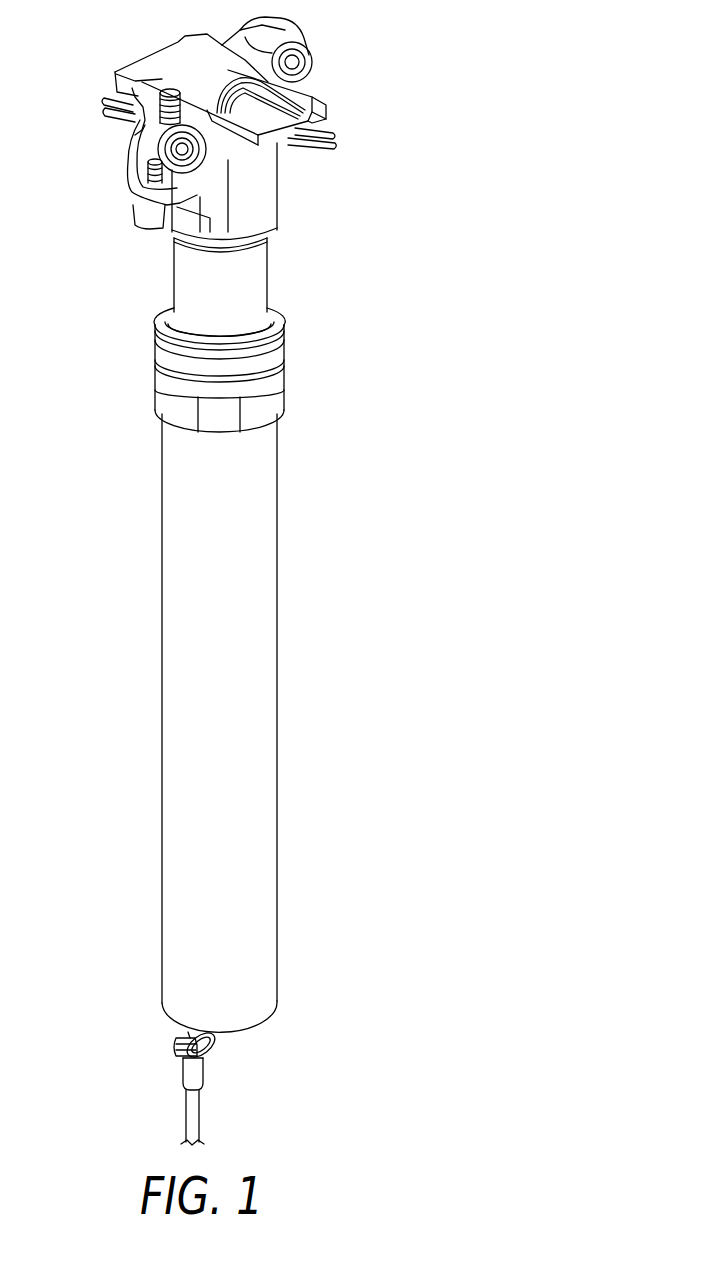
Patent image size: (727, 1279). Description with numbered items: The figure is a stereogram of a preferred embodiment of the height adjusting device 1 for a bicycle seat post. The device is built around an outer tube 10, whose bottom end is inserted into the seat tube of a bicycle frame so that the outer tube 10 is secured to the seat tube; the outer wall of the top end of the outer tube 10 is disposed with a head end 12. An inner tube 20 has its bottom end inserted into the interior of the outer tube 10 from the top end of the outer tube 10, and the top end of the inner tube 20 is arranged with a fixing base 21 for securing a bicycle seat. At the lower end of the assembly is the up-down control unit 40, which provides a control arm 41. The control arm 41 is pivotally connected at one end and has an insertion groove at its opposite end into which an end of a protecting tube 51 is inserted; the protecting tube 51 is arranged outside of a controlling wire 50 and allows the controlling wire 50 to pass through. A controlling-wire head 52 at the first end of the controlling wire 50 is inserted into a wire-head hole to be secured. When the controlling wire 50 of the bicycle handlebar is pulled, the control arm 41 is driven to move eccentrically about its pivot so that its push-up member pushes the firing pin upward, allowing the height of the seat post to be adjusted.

The height adjusting device 1 is at (337, 522).
The outer tube 10 is at (238, 692).
The head end 12 is at (260, 377).
The inner tube 20 is at (248, 277).
The fixing base 21 is at (312, 106).
The up-down control unit 40 is at (176, 1084).
The control arm 41 is at (209, 1039).
The controlling wire 50 is at (192, 1034).
The protecting tube 51 is at (222, 1117).
The controlling-wire head 52 is at (191, 1073).